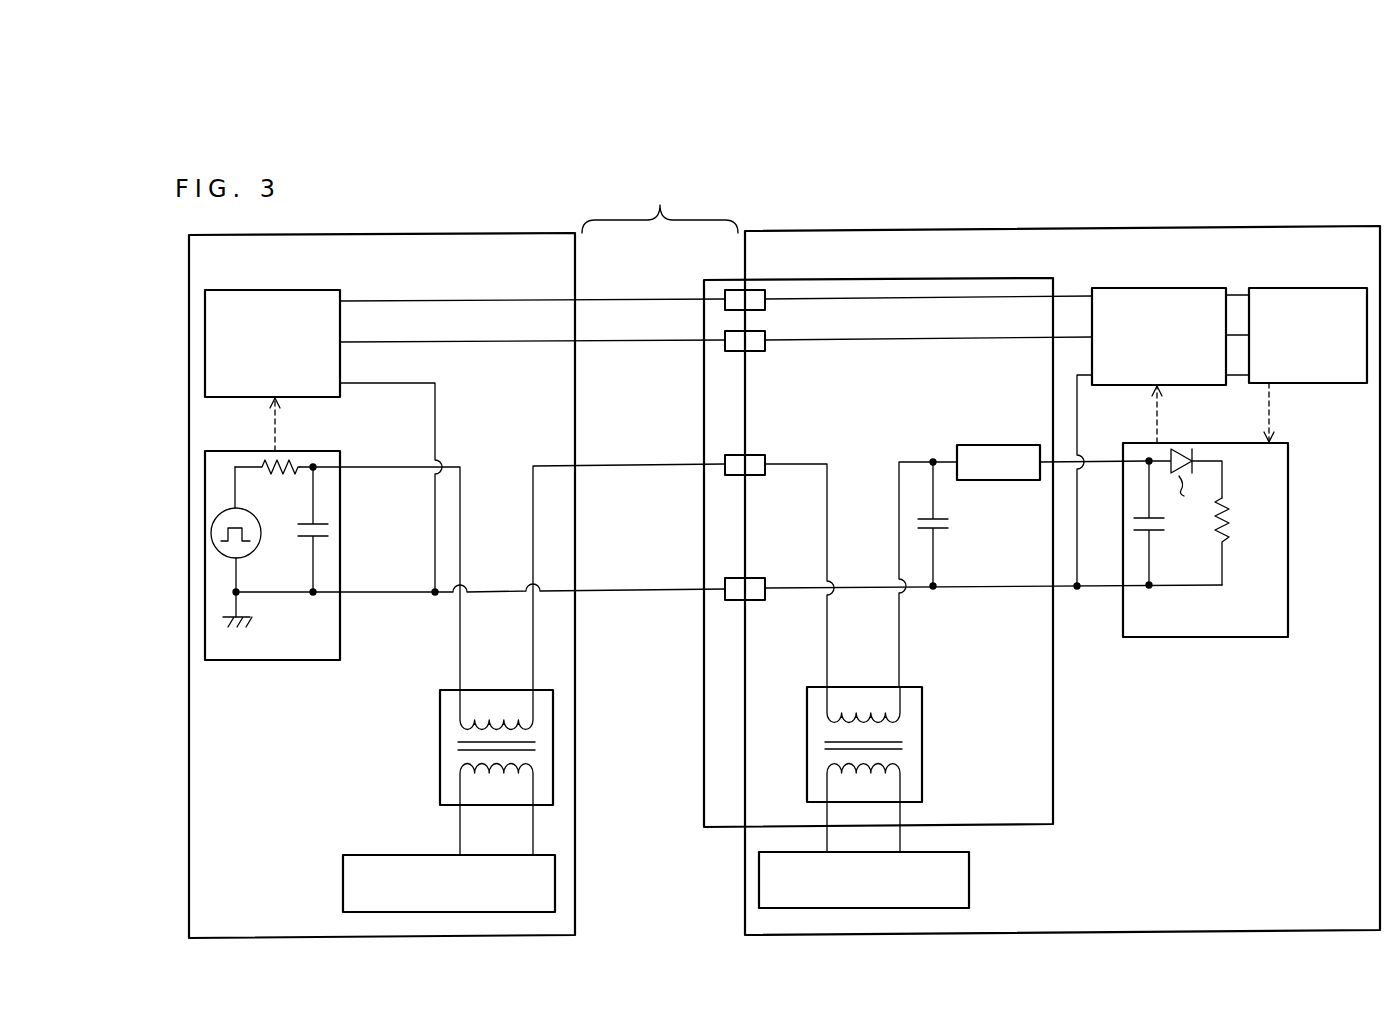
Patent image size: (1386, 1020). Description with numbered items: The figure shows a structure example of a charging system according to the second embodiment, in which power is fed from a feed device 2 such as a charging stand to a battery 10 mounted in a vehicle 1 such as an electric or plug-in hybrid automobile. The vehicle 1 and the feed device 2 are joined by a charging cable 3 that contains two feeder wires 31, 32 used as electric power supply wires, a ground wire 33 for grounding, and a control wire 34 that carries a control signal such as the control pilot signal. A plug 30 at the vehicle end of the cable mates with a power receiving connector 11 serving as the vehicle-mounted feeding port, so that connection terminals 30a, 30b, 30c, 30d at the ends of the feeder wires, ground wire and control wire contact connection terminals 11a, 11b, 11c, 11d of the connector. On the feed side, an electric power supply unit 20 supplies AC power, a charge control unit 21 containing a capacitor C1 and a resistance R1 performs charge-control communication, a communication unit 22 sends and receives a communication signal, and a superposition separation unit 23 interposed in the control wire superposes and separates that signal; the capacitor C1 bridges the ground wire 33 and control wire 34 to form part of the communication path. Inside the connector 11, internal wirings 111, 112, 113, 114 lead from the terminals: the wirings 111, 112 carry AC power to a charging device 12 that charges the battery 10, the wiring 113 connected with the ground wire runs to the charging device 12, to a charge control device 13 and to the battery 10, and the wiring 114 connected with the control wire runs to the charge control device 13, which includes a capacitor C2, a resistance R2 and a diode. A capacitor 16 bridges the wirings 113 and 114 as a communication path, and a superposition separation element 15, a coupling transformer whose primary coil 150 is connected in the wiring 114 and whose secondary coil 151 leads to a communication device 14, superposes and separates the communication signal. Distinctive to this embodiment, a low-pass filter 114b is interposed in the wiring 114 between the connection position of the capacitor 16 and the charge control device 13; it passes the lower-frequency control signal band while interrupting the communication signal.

The vehicle 1 is at (1080, 230).
The feed device 2 is at (443, 231).
The charging cable 3 is at (660, 206).
The battery 10 is at (1275, 288).
The power receiving connector 11 is at (900, 279).
The connection terminal 11a is at (768, 306).
The connection terminal 11b is at (768, 347).
The connection terminal 11c is at (758, 578).
The connection terminal 11d is at (756, 455).
The charging device 12 is at (1158, 288).
The charge control device 13 is at (1205, 574).
The communication device 14 is at (972, 870).
The superposition separation element 15 is at (900, 769).
The primary coil 150 is at (905, 722).
The secondary coil 151 is at (905, 762).
The capacitor 16 is at (950, 526).
The electric power supply unit 20 is at (245, 292).
The charge control unit 21 is at (272, 591).
The communication unit 22 is at (343, 875).
The superposition separation unit 23 is at (440, 770).
The plug 30 is at (721, 278).
The connection terminal 30a is at (723, 303).
The connection terminal 30b is at (725, 344).
The connection terminal 30c is at (726, 586).
The connection terminal 30d is at (726, 458).
The feeder wire 31 is at (603, 299).
The feeder wire 32 is at (610, 343).
The ground wire 33 is at (608, 590).
The control wire 34 is at (608, 466).
The internal wiring 111 is at (880, 300).
The internal wiring 112 is at (880, 340).
The internal wiring 113 is at (792, 590).
The internal wiring 114 is at (792, 466).
The low-pass filter 114b is at (985, 443).
The resistance R1 is at (283, 476).
The capacitor C1 is at (297, 530).
The resistance R2 is at (1232, 530).
The capacitor C2 is at (1168, 528).